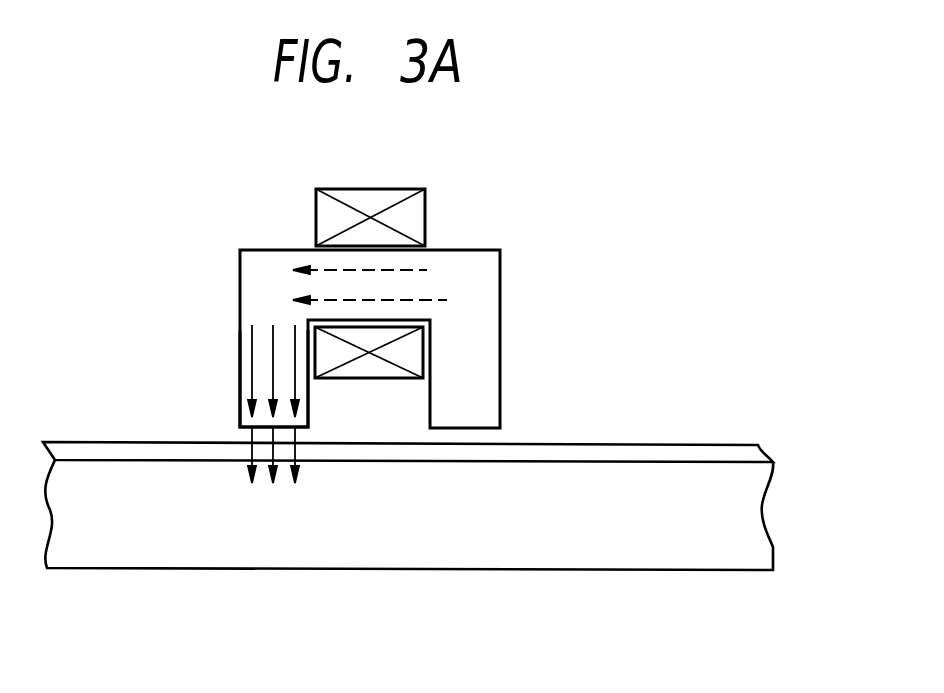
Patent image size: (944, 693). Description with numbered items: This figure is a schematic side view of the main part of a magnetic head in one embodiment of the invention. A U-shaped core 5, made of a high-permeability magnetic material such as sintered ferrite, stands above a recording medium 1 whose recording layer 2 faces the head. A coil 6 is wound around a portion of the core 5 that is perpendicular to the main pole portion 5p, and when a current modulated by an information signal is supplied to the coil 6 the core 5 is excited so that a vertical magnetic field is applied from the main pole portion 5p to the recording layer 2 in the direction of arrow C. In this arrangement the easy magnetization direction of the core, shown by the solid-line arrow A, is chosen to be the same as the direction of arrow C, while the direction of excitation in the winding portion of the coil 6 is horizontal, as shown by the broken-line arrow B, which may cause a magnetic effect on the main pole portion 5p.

The recording medium 1 is at (80, 552).
The recording layer 2 is at (85, 458).
The core 5 is at (495, 338).
The main pole portion 5p is at (267, 372).
The coil 6 is at (397, 189).
The easy magnetization direction arrow A is at (252, 342).
The excitation direction arrow B is at (447, 270).
The applied magnetic field direction arrow C is at (250, 452).